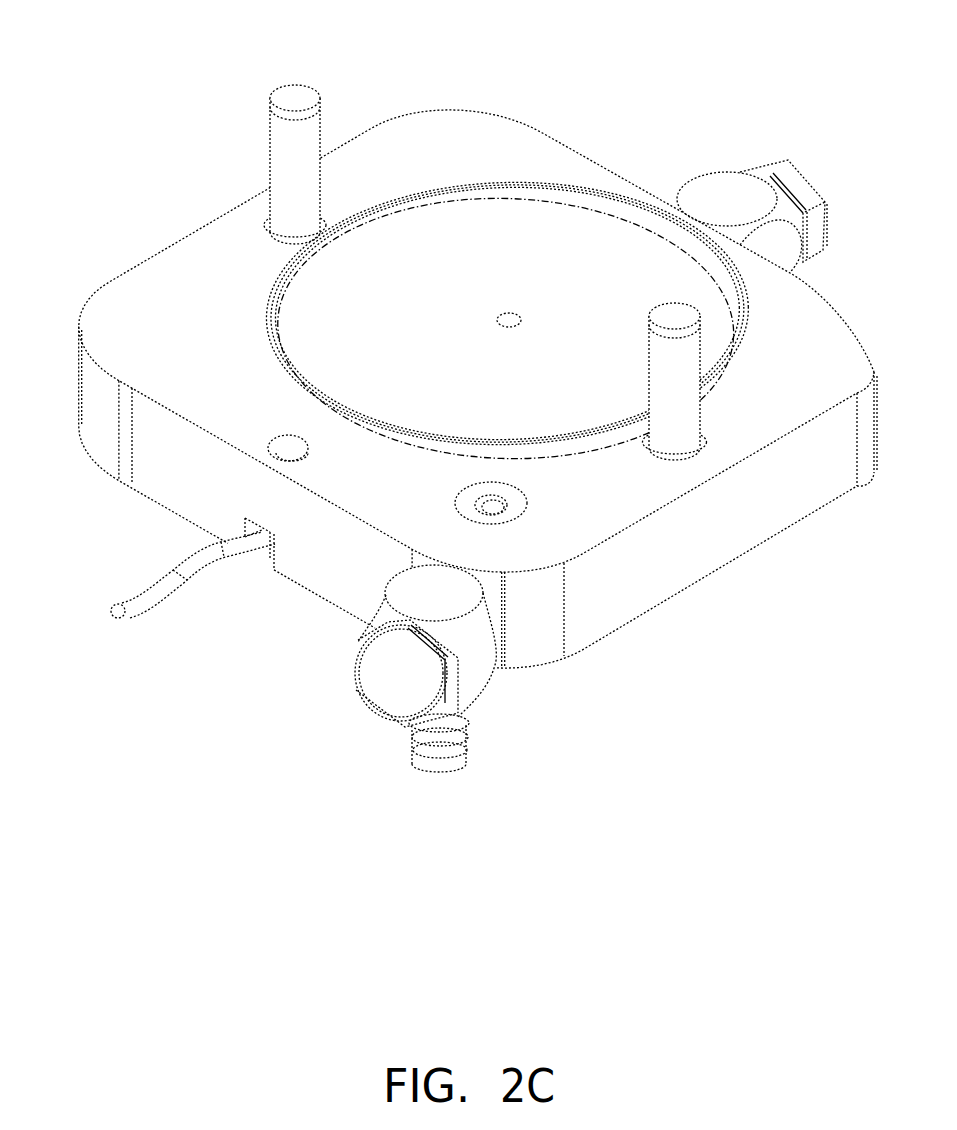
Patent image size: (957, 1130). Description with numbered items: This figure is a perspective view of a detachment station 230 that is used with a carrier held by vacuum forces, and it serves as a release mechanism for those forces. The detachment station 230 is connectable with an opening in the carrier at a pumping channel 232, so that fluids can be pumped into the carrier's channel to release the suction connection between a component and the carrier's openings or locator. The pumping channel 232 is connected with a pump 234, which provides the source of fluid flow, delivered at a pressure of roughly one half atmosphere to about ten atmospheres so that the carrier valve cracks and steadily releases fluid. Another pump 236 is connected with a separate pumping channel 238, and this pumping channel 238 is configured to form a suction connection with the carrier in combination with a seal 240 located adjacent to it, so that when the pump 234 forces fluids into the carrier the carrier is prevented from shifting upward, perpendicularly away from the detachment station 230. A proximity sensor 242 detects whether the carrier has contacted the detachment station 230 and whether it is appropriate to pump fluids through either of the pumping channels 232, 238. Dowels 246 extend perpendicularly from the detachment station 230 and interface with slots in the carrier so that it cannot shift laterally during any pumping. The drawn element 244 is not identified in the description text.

The detachment station 230 is at (87, 149).
The pumping channel 232 is at (523, 503).
The pump 234 is at (362, 697).
The pump 236 is at (768, 160).
The pumping channel 238 is at (510, 313).
The seal 240 is at (486, 184).
The proximity sensor 242 is at (268, 446).
The cable 244 is at (133, 620).
The dowels 246 is at (278, 88).